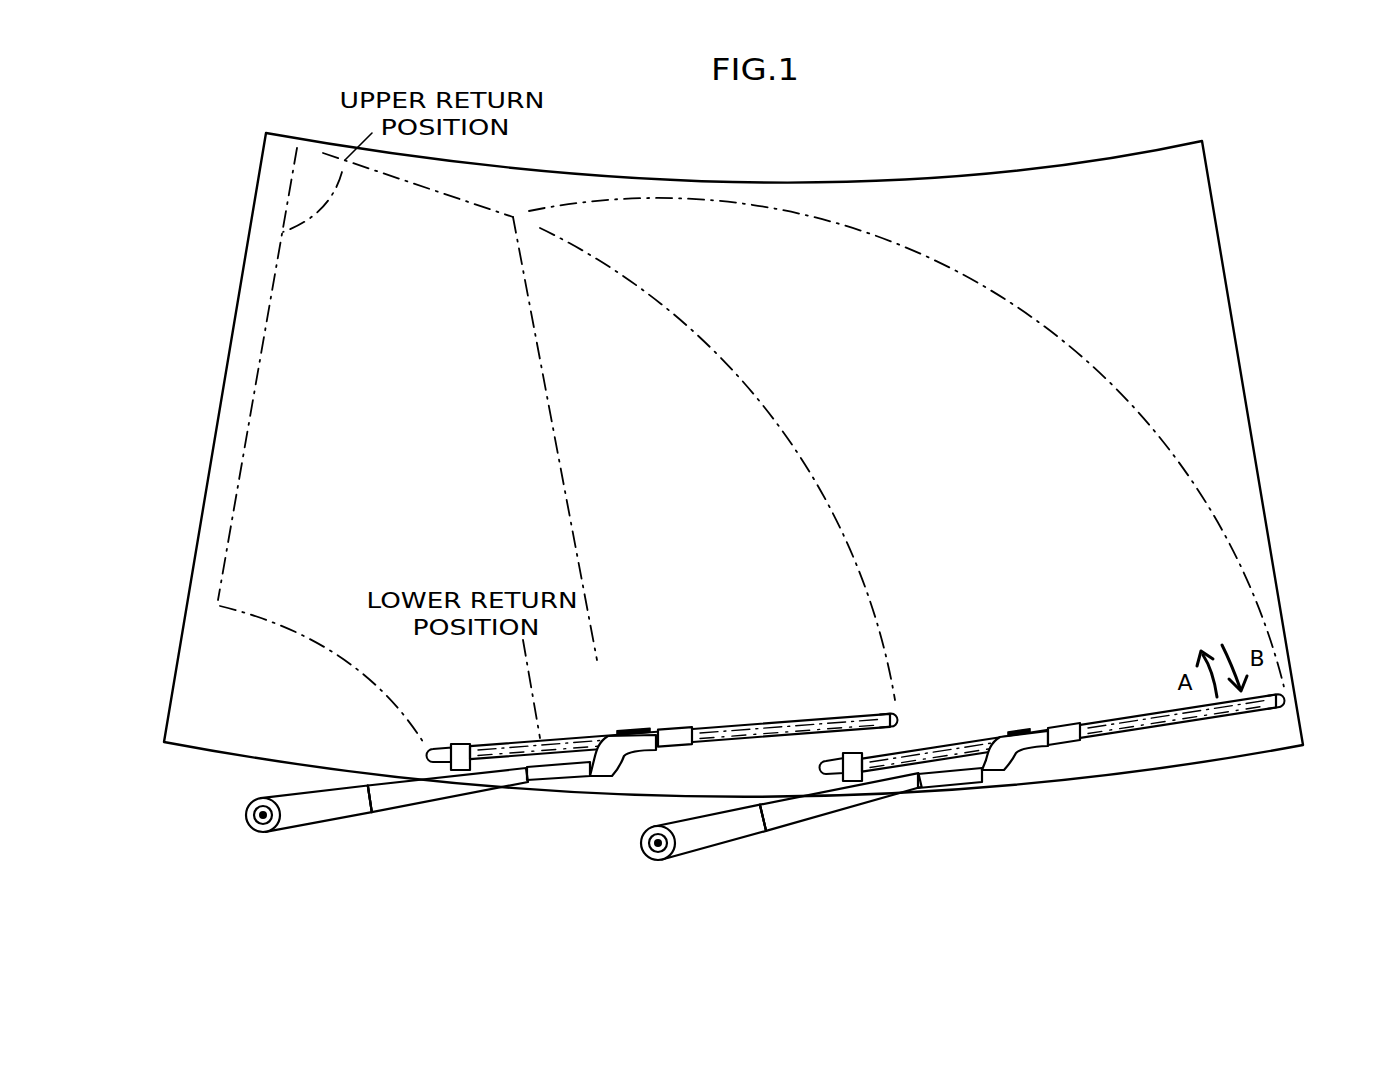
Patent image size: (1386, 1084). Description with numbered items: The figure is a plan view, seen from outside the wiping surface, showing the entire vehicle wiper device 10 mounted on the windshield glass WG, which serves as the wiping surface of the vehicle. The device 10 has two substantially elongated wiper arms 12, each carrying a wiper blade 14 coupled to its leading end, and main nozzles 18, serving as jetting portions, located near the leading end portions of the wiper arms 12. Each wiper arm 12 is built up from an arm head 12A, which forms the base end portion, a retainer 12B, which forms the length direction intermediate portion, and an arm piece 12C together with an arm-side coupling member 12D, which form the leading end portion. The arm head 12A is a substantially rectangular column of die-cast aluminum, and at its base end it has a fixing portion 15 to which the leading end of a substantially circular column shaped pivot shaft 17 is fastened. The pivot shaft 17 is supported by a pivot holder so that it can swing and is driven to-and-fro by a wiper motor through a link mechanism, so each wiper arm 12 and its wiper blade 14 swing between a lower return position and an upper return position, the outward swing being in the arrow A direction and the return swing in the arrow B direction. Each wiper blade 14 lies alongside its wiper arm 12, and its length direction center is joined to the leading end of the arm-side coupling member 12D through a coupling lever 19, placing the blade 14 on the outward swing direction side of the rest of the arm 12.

The vehicle wiper device 10 is at (1150, 846).
The wiper arm 12 is at (424, 818).
The arm head 12A is at (325, 818).
The retainer 12B is at (385, 805).
The arm piece 12C is at (548, 779).
The arm-side coupling member 12D is at (600, 771).
The wiper blade 14 is at (812, 718).
The fixing portion 15 is at (268, 832).
The pivot shaft 17 is at (250, 818).
The main nozzle 18 is at (632, 730).
The coupling lever 19 is at (678, 731).
The windshield glass WG is at (1167, 167).